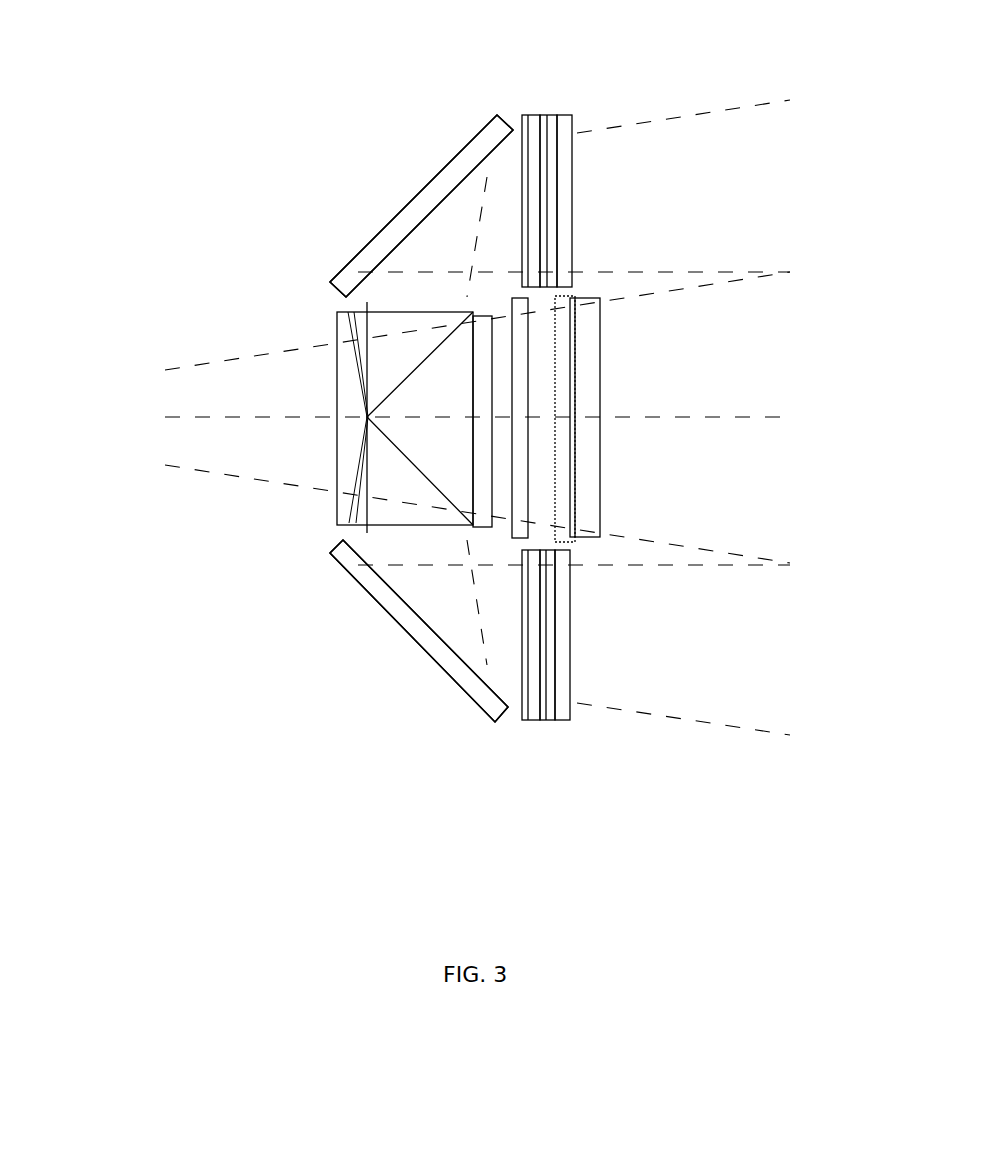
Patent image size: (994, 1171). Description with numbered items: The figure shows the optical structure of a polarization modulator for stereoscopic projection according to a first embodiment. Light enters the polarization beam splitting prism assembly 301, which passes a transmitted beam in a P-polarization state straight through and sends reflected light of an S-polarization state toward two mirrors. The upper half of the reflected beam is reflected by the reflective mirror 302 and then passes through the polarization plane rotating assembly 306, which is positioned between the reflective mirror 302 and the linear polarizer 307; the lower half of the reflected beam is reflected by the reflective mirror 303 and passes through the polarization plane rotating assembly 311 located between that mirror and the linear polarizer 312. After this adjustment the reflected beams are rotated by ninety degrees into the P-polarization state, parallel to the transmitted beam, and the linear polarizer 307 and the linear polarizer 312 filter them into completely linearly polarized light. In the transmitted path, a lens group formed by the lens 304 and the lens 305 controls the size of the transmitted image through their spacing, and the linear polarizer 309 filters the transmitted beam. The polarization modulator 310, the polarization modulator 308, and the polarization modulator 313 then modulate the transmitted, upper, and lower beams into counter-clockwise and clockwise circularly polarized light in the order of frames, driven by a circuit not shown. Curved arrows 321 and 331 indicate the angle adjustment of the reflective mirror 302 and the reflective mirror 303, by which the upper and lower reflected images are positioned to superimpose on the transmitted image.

The polarization beam splitting prism assembly 301 is at (341, 405).
The reflective mirror 302 is at (388, 223).
The reflective mirror 303 is at (388, 617).
The lens 304 is at (488, 527).
The lens 305 is at (529, 525).
The polarization plane rotating assembly 306 is at (530, 116).
The linear polarizer 307 is at (550, 116).
The polarization modulator 308 is at (567, 116).
The linear polarizer 309 is at (568, 299).
The polarization modulator 310 is at (590, 410).
The polarization plane rotating assembly 311 is at (528, 720).
The linear polarizer 312 is at (548, 720).
The polarization modulator 313 is at (565, 720).
The tilt rotation of first mirror 321 is at (420, 221).
The tilt rotation of second mirror 331 is at (408, 600).